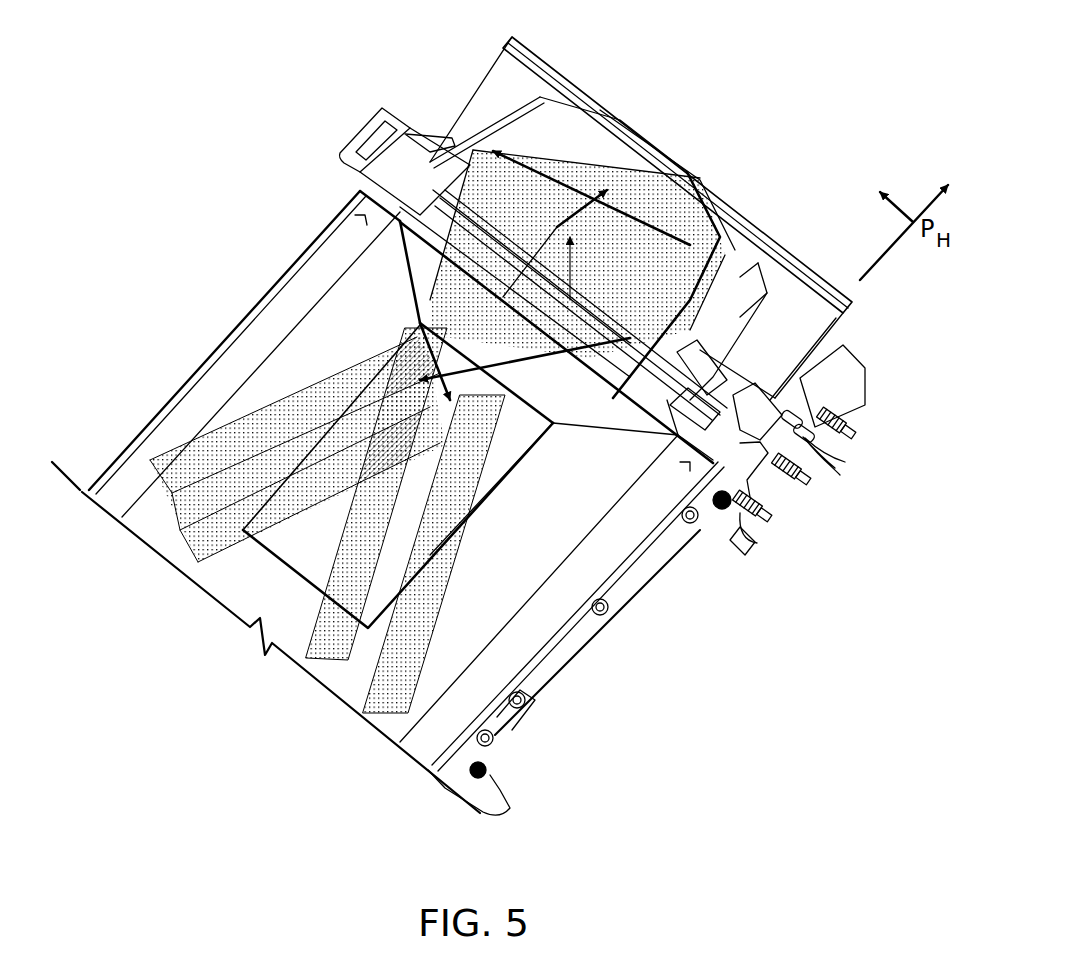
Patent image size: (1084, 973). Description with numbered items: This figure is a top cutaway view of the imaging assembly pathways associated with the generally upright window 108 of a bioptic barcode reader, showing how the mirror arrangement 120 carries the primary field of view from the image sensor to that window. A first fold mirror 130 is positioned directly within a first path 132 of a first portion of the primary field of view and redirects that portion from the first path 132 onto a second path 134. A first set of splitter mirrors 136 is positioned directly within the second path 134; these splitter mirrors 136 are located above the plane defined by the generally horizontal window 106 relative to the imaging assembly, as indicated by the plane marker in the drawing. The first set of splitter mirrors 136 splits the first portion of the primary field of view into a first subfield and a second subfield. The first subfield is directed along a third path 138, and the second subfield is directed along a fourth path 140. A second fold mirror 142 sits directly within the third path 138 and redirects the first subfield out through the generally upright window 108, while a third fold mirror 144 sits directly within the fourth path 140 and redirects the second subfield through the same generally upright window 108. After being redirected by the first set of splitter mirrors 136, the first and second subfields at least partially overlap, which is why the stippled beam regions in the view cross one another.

The generally horizontal window 106 is at (520, 433).
The generally upright window 108 is at (388, 190).
The mirror arrangement 120 is at (752, 164).
The first fold mirror 130 is at (357, 204).
The first path 132 is at (450, 290).
The second path 134 is at (600, 160).
The first set of splitter mirrors 136 is at (617, 125).
The third path 138 is at (525, 150).
The fourth path 140 is at (697, 262).
The second fold mirror 142 is at (497, 122).
The third fold mirror 144 is at (760, 290).